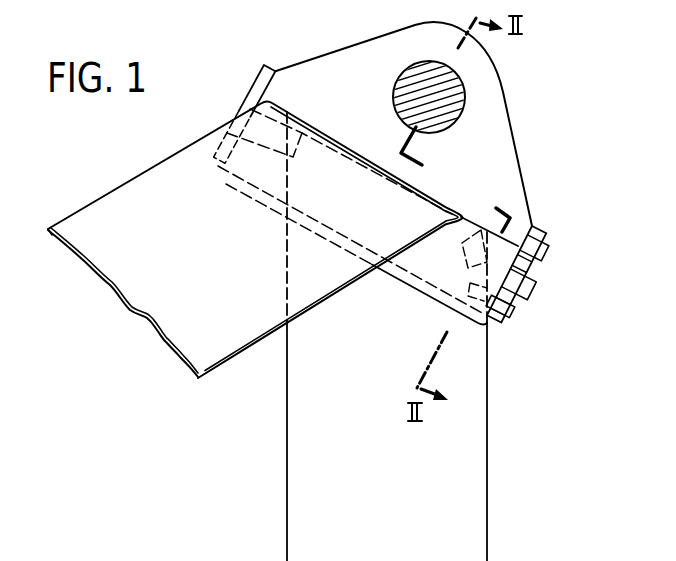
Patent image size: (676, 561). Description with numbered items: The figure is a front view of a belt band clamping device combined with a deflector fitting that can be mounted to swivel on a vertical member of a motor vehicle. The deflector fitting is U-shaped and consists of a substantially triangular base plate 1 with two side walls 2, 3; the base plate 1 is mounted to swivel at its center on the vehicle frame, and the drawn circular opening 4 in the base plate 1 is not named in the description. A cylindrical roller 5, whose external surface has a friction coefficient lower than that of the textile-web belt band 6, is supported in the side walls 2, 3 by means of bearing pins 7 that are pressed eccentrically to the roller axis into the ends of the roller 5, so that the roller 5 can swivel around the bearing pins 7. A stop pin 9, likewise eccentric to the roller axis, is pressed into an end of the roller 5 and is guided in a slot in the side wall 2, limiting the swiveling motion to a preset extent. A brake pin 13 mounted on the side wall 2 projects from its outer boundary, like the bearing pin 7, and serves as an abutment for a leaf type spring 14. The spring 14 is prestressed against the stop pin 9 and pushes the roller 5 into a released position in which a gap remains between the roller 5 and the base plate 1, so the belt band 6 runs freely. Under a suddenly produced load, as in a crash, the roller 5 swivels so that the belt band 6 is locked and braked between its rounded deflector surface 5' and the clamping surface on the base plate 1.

The base plate 1 is at (495, 136).
The side wall 2 is at (539, 229).
The side wall 3 is at (258, 67).
The opening 4 is at (457, 98).
The cylindrical roller 5 is at (318, 211).
The rounded deflector surface 5' is at (424, 282).
The belt band 6 is at (103, 212).
The bearing pin 7 is at (537, 283).
The stop pin 9 is at (512, 318).
The brake pin 13 is at (549, 247).
The leaf type spring 14 is at (533, 268).